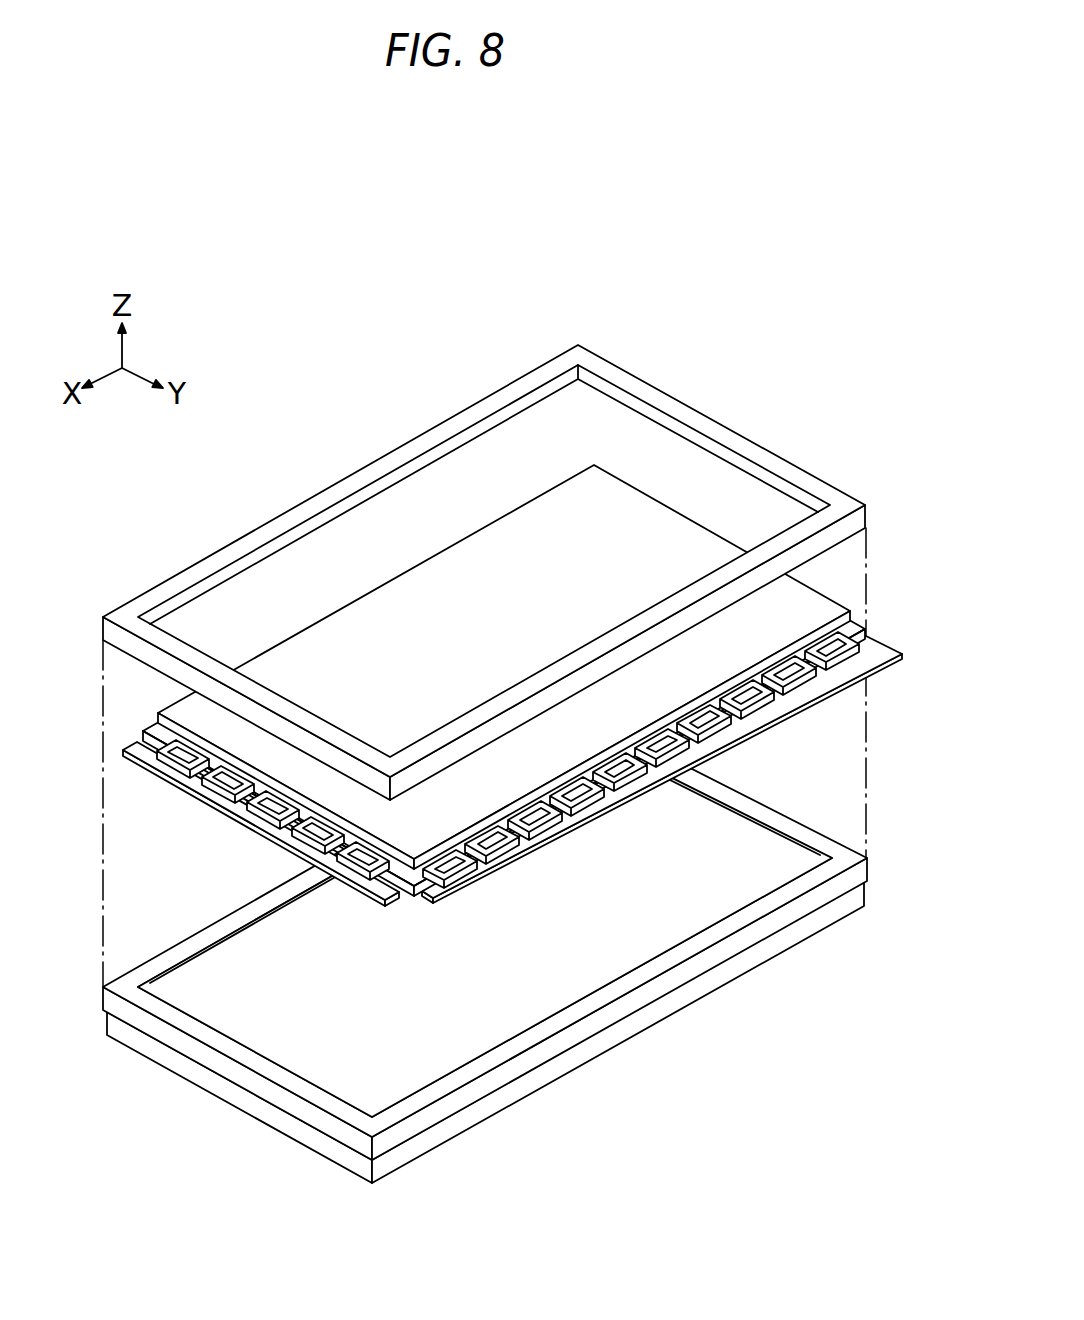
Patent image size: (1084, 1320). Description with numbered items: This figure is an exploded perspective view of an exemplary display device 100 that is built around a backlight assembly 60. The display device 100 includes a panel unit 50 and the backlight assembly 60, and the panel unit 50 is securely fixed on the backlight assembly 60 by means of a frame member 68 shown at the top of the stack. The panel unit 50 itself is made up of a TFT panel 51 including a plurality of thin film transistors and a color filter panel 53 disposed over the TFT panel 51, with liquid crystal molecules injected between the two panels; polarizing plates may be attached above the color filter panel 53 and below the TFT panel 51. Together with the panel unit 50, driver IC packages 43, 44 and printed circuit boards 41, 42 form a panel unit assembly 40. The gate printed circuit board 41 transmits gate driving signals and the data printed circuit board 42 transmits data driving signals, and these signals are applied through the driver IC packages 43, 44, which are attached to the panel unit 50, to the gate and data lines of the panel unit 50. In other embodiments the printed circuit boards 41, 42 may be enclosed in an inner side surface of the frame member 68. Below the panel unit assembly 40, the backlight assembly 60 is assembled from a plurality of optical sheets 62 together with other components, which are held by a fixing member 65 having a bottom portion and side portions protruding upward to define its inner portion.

The display device 100 is at (395, 333).
The frame member 68 is at (831, 497).
The panel unit 50 is at (432, 590).
The color filter panel 53 is at (848, 608).
The TFT panel 51 is at (858, 624).
The data printed circuit board 42 is at (894, 654).
The driver IC package 44 is at (860, 656).
The panel unit assembly 40 is at (500, 685).
The driver IC package 43 is at (167, 773).
The gate printed circuit board 41 is at (222, 805).
The backlight assembly 60 is at (515, 949).
The fixing member 65 is at (642, 1015).
The optical sheets 62 is at (320, 1037).